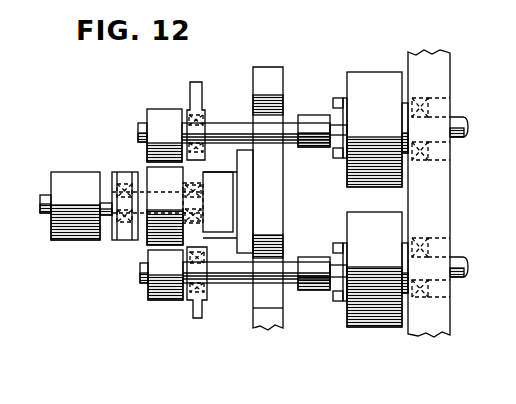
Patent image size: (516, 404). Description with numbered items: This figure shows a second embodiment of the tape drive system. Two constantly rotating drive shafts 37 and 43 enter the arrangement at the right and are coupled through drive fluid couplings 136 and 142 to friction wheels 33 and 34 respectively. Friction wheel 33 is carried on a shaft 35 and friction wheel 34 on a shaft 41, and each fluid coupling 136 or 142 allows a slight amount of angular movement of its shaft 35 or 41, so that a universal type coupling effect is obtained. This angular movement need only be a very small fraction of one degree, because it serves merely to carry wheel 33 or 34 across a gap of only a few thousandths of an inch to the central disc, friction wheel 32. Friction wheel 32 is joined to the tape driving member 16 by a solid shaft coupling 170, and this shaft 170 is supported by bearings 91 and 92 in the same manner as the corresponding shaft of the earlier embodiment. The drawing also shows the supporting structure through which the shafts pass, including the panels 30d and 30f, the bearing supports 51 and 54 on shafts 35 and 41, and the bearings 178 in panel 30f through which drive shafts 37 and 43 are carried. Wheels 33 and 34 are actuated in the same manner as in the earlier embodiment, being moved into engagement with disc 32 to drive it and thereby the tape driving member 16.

The tape driving member 16 is at (73, 172).
The solid shaft coupling 170 is at (103, 218).
The bearing 91 is at (126, 185).
The friction wheel 32 is at (148, 243).
The bearing 92 is at (192, 182).
The friction wheel 33 is at (147, 115).
The bearing support 51 is at (193, 82).
The shaft 35 is at (241, 125).
The frame panel 30d is at (262, 68).
The drive fluid coupling 136 is at (361, 70).
The frame panel 30f is at (420, 56).
The bearings 178 is at (420, 100).
The drive shaft 37 is at (456, 120).
The drive shaft 43 is at (458, 258).
The drive fluid coupling 142 is at (378, 328).
The shaft 41 is at (247, 278).
The bearing support 54 is at (195, 306).
The friction wheel 34 is at (152, 288).